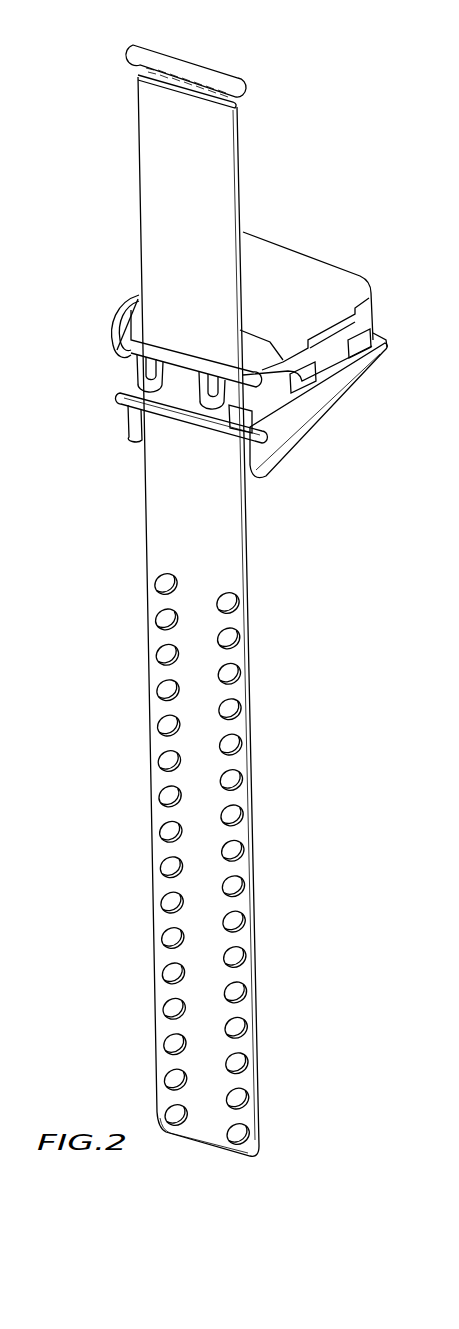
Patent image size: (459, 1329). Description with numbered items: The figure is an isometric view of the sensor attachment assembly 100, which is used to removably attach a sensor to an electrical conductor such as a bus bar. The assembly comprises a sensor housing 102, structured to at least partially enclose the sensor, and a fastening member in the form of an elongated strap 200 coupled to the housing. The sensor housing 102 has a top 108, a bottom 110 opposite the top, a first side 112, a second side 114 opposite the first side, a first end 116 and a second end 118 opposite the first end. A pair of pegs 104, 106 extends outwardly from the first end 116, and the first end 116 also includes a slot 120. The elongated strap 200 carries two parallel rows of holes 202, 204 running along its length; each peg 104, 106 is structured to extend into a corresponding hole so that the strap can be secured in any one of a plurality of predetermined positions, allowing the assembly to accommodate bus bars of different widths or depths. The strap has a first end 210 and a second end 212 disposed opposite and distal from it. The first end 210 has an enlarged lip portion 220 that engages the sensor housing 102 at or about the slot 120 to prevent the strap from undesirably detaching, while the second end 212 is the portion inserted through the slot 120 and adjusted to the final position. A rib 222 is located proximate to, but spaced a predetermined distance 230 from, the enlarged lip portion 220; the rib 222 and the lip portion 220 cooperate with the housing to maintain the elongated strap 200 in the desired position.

The sensor attachment assembly 100 is at (458, 118).
The sensor housing 102 is at (396, 274).
The peg 104 is at (122, 352).
The peg 106 is at (198, 400).
The top 108 is at (275, 257).
The bottom 110 is at (300, 462).
The first side 112 is at (122, 398).
The second side 114 is at (355, 395).
The first end 116 is at (128, 432).
The second end 118 is at (386, 366).
The slot 120 is at (201, 350).
The elongated strap 200 is at (152, 152).
The holes 202 is at (160, 617).
The holes 204 is at (234, 638).
The first end 210 is at (108, 48).
The second end 212 is at (287, 1136).
The enlarged lip portion 220 is at (213, 74).
The rib 222 is at (216, 104).
The predetermined distance 230 is at (178, 97).